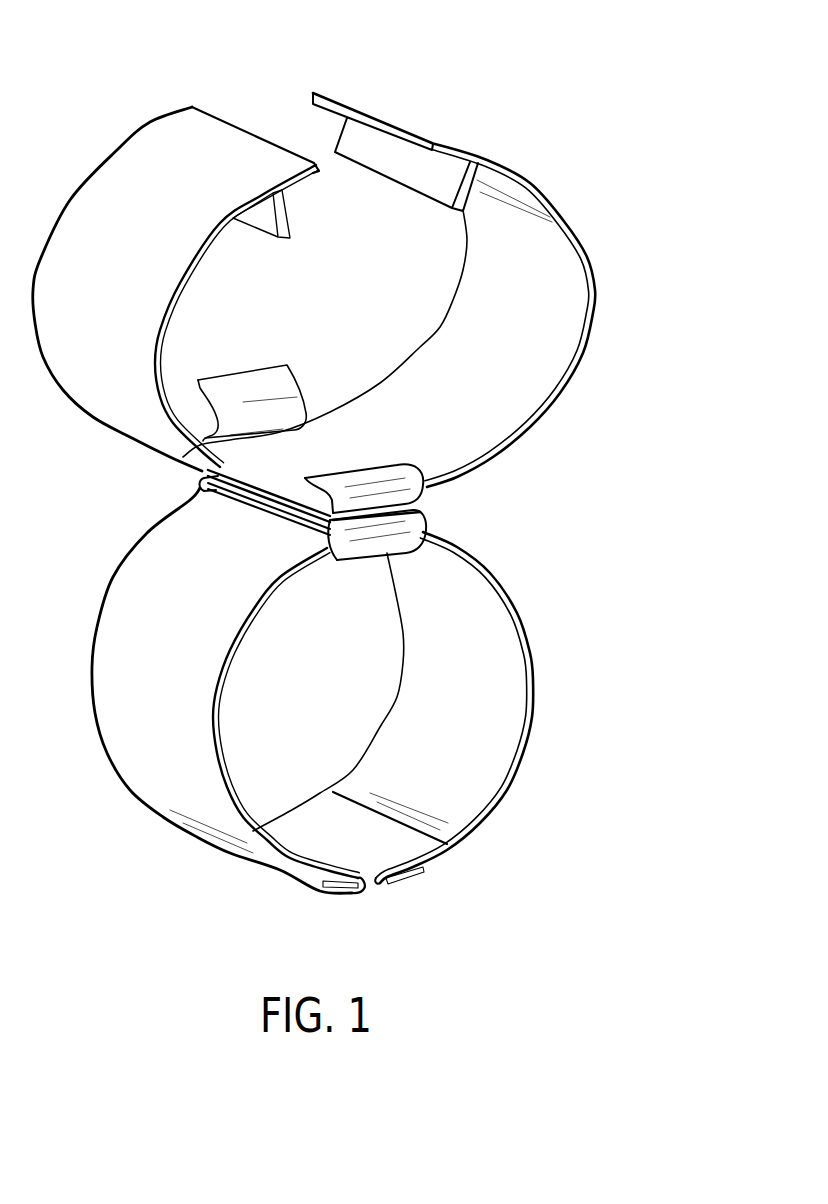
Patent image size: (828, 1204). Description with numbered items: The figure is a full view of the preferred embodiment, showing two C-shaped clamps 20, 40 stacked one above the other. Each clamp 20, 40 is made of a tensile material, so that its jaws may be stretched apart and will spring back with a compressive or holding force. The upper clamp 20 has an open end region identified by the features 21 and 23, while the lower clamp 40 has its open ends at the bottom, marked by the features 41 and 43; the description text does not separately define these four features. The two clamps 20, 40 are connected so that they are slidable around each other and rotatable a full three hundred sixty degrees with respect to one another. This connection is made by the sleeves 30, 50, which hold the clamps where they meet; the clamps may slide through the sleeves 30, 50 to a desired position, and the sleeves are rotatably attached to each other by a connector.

The C-shaped clamp 20 is at (361, 272).
The first end portion of first ring member 21 is at (230, 143).
The latch tab of first ring member 23 is at (367, 108).
The sleeve 30 is at (393, 470).
The C-shaped clamp 40 is at (359, 728).
The first end lip of second ring member 41 is at (330, 893).
The second end lip of second ring member 43 is at (422, 882).
The sleeve 50 is at (200, 478).